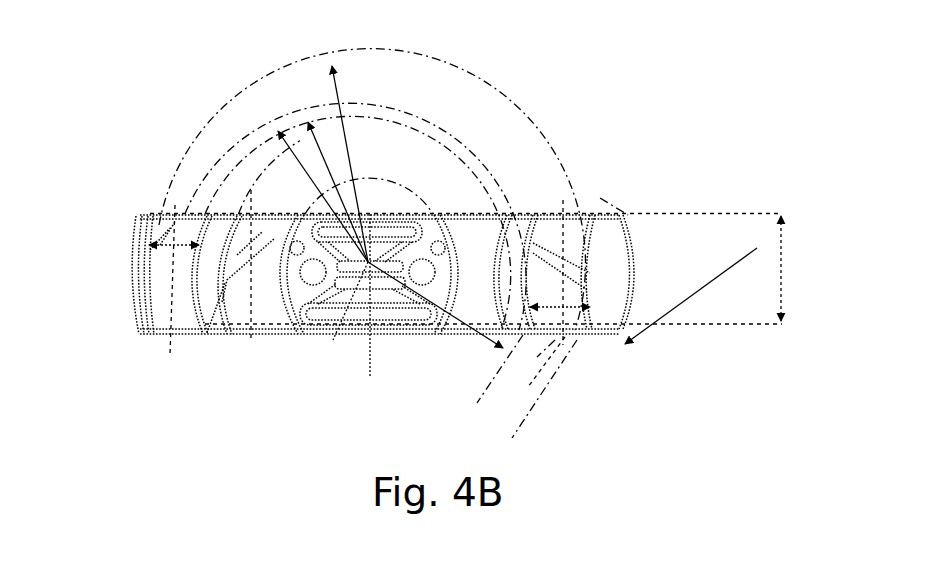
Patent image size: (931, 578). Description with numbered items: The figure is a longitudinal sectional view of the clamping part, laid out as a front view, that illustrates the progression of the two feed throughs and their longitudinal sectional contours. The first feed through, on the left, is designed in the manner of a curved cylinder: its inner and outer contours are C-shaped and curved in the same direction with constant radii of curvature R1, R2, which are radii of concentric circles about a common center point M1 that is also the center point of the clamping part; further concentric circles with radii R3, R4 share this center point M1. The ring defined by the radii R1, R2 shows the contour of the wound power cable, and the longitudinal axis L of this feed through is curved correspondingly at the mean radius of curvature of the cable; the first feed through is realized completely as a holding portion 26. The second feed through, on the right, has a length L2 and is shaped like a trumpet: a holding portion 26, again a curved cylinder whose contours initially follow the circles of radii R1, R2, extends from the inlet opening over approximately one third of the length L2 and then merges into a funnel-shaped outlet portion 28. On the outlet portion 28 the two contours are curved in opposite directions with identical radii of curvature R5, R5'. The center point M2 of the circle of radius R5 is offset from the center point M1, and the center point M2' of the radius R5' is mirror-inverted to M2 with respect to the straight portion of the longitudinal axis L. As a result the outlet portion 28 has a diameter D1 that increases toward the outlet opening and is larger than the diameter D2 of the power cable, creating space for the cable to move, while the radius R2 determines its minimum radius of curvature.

The radius of curvature R1 is at (328, 64).
The radius of curvature R2 is at (306, 118).
The radius of curvature R3 is at (276, 128).
The radius of curvature R4 is at (297, 166).
The radius of curvature R5 is at (498, 318).
The radius of curvature R5' is at (691, 293).
The diameter D1 is at (489, 148).
The diameter of the power cable D2 is at (160, 213).
The longitudinal axis L is at (178, 340).
The length L2 is at (780, 283).
The center point M1 is at (335, 340).
The center point M2 is at (370, 306).
The center point M2' is at (729, 233).
The holding portion 26 is at (150, 242).
The outlet portion 28 is at (636, 214).